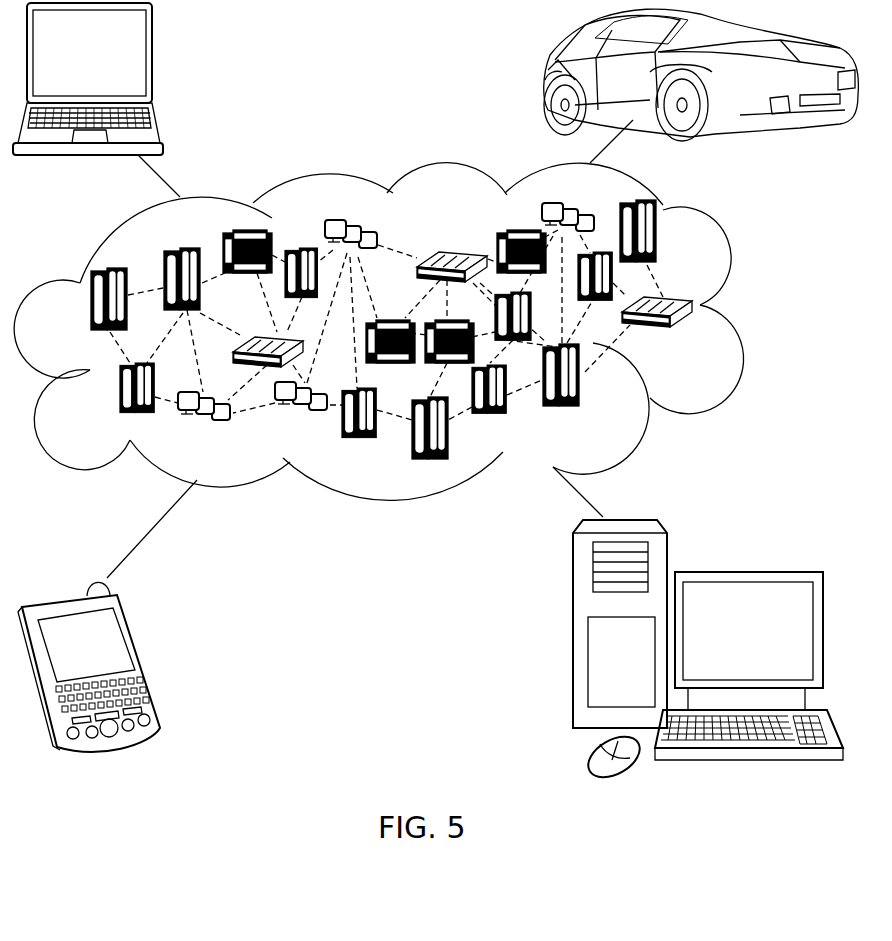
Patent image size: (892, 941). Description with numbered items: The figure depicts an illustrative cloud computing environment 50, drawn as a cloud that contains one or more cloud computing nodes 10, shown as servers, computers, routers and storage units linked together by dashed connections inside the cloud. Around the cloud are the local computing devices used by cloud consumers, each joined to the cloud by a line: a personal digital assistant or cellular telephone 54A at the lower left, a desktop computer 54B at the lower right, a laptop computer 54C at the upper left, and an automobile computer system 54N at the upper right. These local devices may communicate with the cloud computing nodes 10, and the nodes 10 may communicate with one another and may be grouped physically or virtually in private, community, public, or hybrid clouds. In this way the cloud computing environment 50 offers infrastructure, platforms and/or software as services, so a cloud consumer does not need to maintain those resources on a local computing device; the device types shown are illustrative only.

The cloud computing node 10 is at (700, 340).
The cloud computing environment 50 is at (750, 307).
The personal digital assistant or cellular telephone 54A is at (143, 660).
The desktop computer 54B is at (745, 572).
The laptop computer 54C is at (152, 62).
The automobile computer system 54N is at (548, 74).